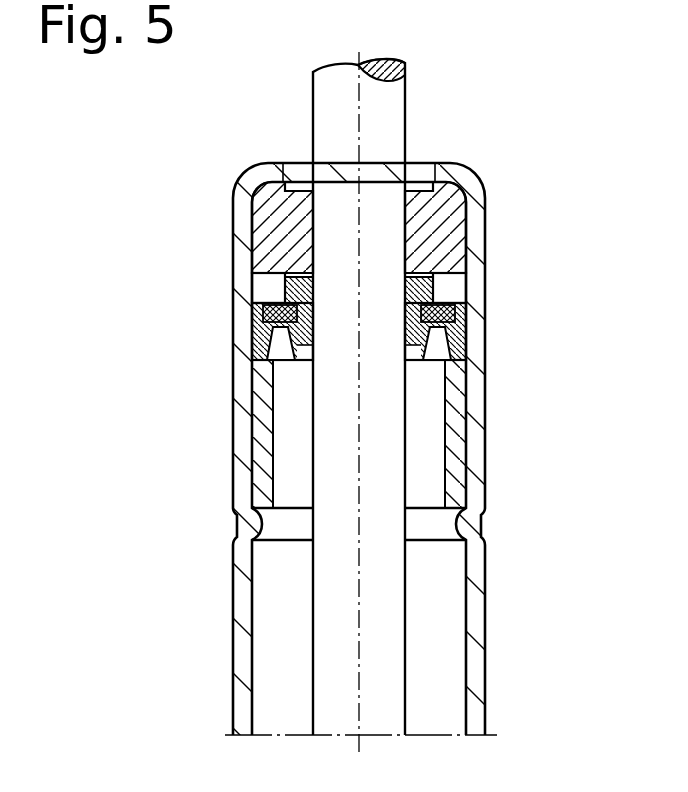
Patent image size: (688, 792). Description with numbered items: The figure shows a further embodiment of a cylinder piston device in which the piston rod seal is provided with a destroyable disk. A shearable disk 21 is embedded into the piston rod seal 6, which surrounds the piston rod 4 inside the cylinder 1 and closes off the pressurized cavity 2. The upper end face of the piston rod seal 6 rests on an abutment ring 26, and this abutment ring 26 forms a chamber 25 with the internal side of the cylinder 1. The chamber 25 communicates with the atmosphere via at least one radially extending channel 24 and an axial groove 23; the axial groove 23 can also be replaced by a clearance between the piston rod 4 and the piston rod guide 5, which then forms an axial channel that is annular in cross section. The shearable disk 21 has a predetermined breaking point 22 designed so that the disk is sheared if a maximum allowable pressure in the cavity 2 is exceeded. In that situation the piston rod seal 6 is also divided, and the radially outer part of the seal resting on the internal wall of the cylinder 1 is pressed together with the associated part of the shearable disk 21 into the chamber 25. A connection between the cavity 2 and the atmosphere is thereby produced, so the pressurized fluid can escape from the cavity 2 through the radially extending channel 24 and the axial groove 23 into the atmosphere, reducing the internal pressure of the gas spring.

The cylinder 1 is at (473, 682).
The cavity 2 is at (435, 605).
The piston rod 4 is at (375, 445).
The piston rod guide 5 is at (275, 220).
The piston rod seal 6 is at (257, 345).
The shearable disk 21 is at (452, 315).
The predetermined breaking point 22 is at (260, 315).
The axial groove 23 is at (425, 213).
The radially extending channel 24 is at (420, 285).
The chamber 25 is at (442, 293).
The abutment ring 26 is at (283, 290).